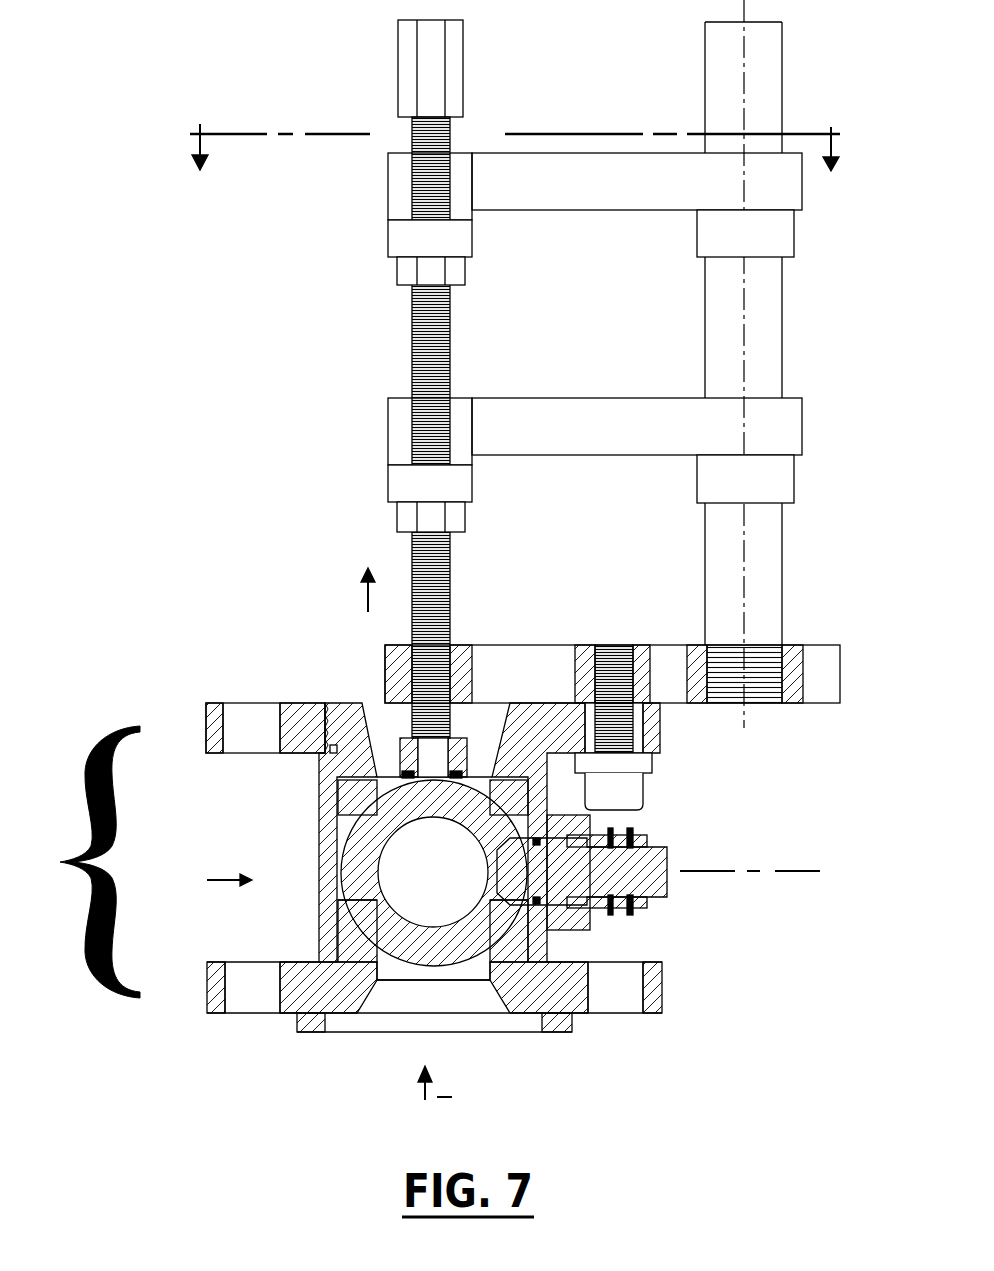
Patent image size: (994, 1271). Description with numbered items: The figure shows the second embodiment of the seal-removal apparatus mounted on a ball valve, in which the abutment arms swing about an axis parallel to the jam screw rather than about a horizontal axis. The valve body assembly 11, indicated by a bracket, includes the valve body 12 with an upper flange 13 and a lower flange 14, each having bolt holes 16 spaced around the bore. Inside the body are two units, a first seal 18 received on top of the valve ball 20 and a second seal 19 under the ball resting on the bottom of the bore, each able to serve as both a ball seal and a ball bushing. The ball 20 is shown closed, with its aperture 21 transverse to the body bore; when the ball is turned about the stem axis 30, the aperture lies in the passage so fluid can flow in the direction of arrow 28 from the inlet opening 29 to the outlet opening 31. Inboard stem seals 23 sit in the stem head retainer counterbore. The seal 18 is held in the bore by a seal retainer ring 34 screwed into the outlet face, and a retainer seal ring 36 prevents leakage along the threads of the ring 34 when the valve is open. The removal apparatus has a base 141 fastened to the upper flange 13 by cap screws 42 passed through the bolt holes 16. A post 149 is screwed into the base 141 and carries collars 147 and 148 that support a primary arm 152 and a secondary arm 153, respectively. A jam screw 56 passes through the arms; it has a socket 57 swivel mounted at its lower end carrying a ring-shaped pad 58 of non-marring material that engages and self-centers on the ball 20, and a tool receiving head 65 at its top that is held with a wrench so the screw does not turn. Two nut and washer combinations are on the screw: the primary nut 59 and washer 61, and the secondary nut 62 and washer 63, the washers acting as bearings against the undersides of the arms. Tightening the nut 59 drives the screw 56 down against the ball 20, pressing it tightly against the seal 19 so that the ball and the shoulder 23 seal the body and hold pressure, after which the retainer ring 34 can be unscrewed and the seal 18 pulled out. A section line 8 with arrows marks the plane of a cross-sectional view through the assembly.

The section line 8- 8 is at (515, 138).
The valve body assembly 11 is at (82, 862).
The valve body 12 is at (211, 883).
The upper flange 13 is at (218, 730).
The lower flange 14 is at (213, 990).
The bolt holes 16 is at (258, 708).
The first seal 18 is at (350, 800).
The second seal 19 is at (355, 945).
The valve ball 20 is at (430, 950).
The aperture 21 is at (444, 880).
The inboard stem seals 23 is at (342, 925).
The arrow 28 is at (357, 580).
The inlet opening 29 is at (495, 1025).
The stem axis 30 is at (752, 870).
The outlet opening 31 is at (368, 705).
The seal retainer ring 34 is at (337, 717).
The retainer seal ring 36 is at (318, 758).
The cap screws 42 is at (637, 790).
The jam screw 56 is at (426, 342).
The socket 57 is at (405, 748).
The ring-shaped pad 58 is at (455, 770).
The primary nut 59 is at (408, 270).
The primary washer 61 is at (403, 242).
The secondary nut 62 is at (405, 518).
The secondary washer 63 is at (405, 487).
The tool receiving head 65 is at (462, 58).
The base 141 is at (812, 650).
The collar 147 is at (777, 236).
The collar 148 is at (772, 483).
The post 149 is at (768, 340).
The primary abutment arm 152 is at (595, 197).
The secondary abutment arm 153 is at (530, 415).